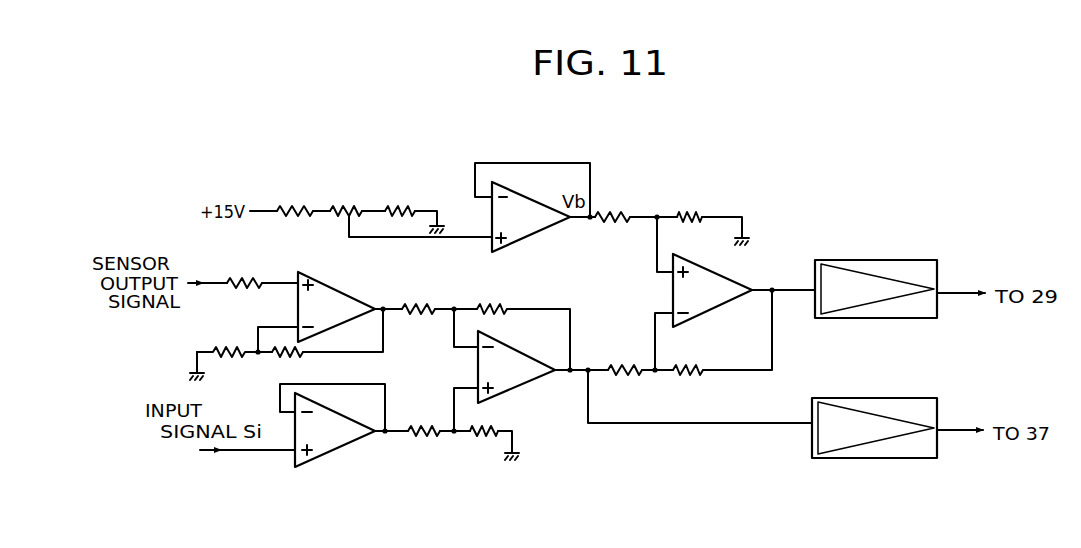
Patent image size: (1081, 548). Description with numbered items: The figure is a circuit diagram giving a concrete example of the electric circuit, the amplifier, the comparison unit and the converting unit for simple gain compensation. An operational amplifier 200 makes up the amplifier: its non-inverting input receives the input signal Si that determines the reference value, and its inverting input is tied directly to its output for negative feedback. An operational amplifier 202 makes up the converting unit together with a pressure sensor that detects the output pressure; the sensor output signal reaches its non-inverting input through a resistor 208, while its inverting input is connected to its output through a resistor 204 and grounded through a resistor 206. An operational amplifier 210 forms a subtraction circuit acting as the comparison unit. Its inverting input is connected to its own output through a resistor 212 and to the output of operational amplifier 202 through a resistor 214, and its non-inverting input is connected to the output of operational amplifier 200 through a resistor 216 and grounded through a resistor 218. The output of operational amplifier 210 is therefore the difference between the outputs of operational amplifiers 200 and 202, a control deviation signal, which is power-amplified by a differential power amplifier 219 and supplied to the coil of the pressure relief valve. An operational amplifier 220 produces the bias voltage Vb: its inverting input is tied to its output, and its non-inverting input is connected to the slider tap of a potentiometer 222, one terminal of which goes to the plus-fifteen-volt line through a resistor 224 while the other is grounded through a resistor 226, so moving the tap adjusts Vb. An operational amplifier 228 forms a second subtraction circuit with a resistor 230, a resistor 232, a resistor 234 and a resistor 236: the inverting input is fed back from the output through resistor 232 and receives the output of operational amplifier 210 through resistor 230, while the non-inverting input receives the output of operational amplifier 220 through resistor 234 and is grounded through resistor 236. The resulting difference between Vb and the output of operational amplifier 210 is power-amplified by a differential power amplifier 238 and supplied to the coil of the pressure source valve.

The operational amplifier 200 is at (342, 447).
The operational amplifier 202 is at (344, 272).
The resistor 204 is at (293, 357).
The resistor 206 is at (223, 357).
The resistor 208 is at (237, 282).
The operational amplifier 210 is at (512, 390).
The resistor 212 is at (502, 305).
The resistor 214 is at (418, 305).
The resistor 216 is at (420, 437).
The resistor 218 is at (482, 437).
The differential power amplifier 219 is at (883, 458).
The operational amplifier 220 is at (532, 233).
The potentiometer 222 is at (347, 204).
The resistor 224 is at (290, 216).
The resistor 226 is at (401, 204).
The operational amplifier 228 is at (733, 262).
The resistor 230 is at (622, 375).
The resistor 232 is at (685, 375).
The resistor 234 is at (612, 210).
The resistor 236 is at (687, 210).
The differential power amplifier 238 is at (882, 320).